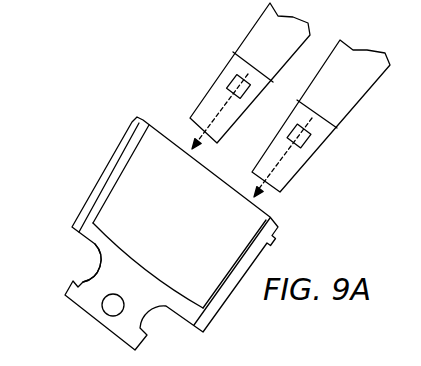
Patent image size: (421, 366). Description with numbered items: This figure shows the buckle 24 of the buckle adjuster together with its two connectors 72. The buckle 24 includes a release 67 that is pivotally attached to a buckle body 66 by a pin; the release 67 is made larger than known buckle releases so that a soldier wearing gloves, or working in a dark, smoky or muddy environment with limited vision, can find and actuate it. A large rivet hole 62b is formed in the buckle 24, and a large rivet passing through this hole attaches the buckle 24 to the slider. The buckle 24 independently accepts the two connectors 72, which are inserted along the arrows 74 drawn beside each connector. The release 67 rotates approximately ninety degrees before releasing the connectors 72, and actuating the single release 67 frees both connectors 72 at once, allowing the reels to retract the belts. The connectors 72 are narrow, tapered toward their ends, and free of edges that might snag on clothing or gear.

The buckle 24 is at (93, 163).
The release 67 is at (184, 223).
The buckle body 66 is at (98, 246).
The large rivet hole 62b is at (121, 302).
The connector 72 is at (230, 72).
The arrow 74 is at (189, 140).